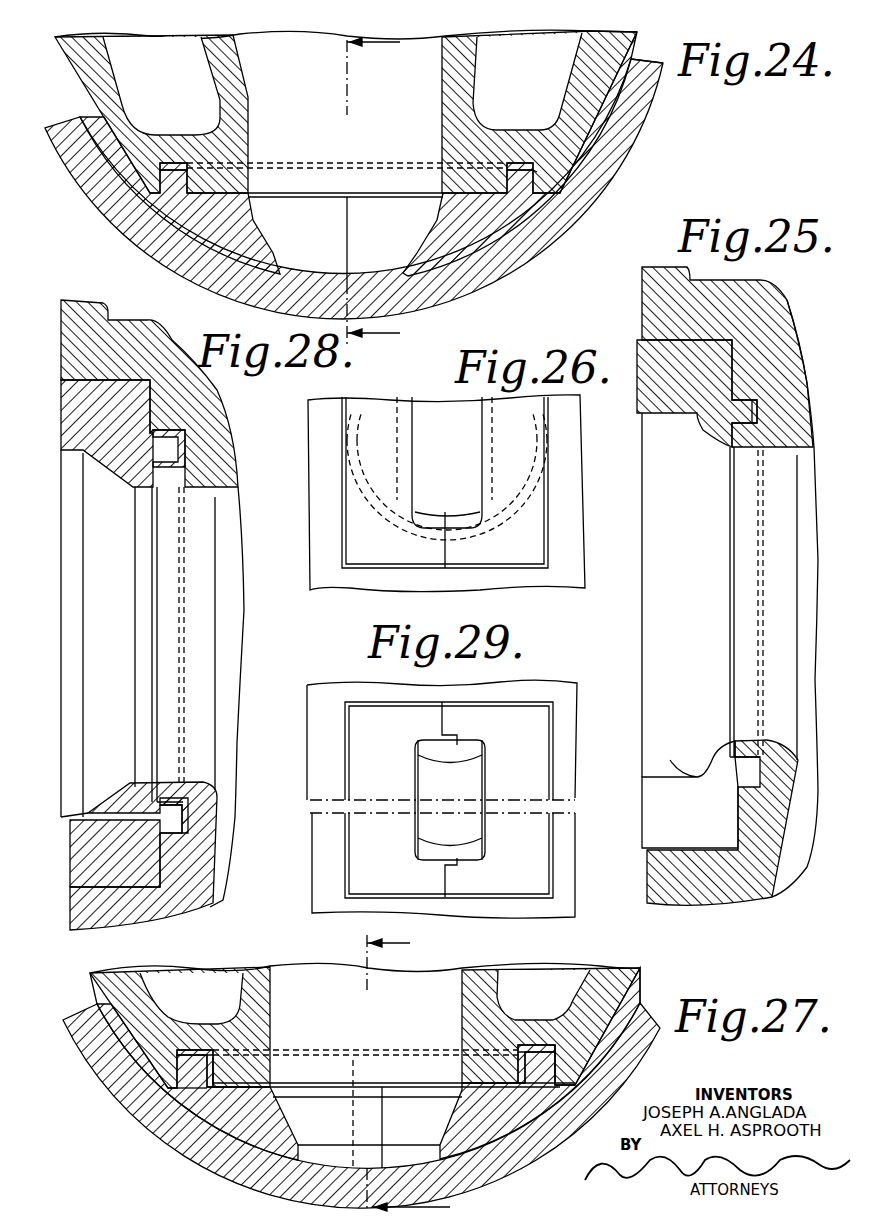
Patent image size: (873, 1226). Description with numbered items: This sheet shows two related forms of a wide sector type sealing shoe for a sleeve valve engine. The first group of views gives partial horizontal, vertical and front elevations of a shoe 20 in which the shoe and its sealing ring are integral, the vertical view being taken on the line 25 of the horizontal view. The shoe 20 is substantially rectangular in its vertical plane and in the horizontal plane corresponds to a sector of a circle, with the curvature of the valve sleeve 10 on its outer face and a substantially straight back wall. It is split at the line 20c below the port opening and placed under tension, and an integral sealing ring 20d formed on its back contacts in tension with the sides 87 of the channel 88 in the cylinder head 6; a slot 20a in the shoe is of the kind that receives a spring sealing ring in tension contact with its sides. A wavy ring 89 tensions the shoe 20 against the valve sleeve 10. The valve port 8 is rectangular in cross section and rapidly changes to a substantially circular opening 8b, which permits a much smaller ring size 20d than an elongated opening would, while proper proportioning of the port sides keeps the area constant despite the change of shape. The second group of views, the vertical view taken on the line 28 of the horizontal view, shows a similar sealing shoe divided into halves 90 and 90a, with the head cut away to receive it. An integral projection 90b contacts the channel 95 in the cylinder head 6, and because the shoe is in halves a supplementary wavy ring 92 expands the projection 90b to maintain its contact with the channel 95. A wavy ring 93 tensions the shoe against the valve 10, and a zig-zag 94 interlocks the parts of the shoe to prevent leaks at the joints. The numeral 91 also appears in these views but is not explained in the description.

In FIG. 24, the cylinder head 6 is at (442, 125).
In FIG. 25, the cylinder head 6 is at (740, 586).
In FIG. 28, the cylinder head 6 is at (200, 893).
In FIG. 27, the cylinder head 6 is at (264, 1020).
In FIG. 24, the valve port 8 is at (473, 273).
In FIG. 25, the valve port 8 is at (742, 532).
In FIG. 28, the valve port 8 is at (167, 644).
In FIG. 26, the valve port 8 is at (477, 523).
In FIG. 29, the valve port 8 is at (477, 847).
In FIG. 26, the circular opening 8b is at (523, 490).
In FIG. 24, the valve sleeve 10 is at (483, 298).
In FIG. 27, the valve sleeve 10 is at (361, 1105).
In FIG. 24, the shoe 20 is at (497, 222).
In FIG. 25, the shoe 20 is at (640, 400).
In FIG. 28, the shoe 20 is at (110, 633).
In FIG. 27, the shoe 20 is at (283, 1138).
In FIG. 26, the slot 20a is at (392, 515).
In FIG. 24, the split line 20c is at (350, 215).
In FIG. 26, the split line 20c is at (447, 550).
In FIG. 24, the integral sealing ring 20d is at (535, 172).
In FIG. 24, the section line 25- 25 is at (395, 191).
In FIG. 27, the section line 28- 28 is at (426, 1075).
In FIG. 24, the sides of channel 87 is at (630, 153).
In FIG. 25, the sides of channel 87 is at (752, 400).
In FIG. 24, the channel 88 is at (497, 163).
In FIG. 26, the channel 88 is at (530, 452).
In FIG. 24, the wavy ring 89 is at (172, 163).
In FIG. 25, the wavy ring 89 is at (762, 582).
In FIG. 28, the wavy ring 89 is at (181, 635).
In FIG. 29, the shoe half 90 is at (543, 748).
In FIG. 29, the shoe half 90a is at (353, 750).
In FIG. 28, the integral projection 90b is at (177, 827).
In FIG. 27, the integral projection 90b is at (193, 1075).
In FIG. 28, the lower clip 91 is at (163, 800).
In FIG. 27, the lower clip 91 is at (517, 1048).
In FIG. 27, the supplementary wavy ring 92 is at (216, 1070).
In FIG. 28, the wavy ring 93 is at (187, 452).
In FIG. 27, the wavy ring 93 is at (205, 1050).
In FIG. 29, the zig-zag 94 is at (452, 865).
In FIG. 27, the channel 95 is at (555, 1043).